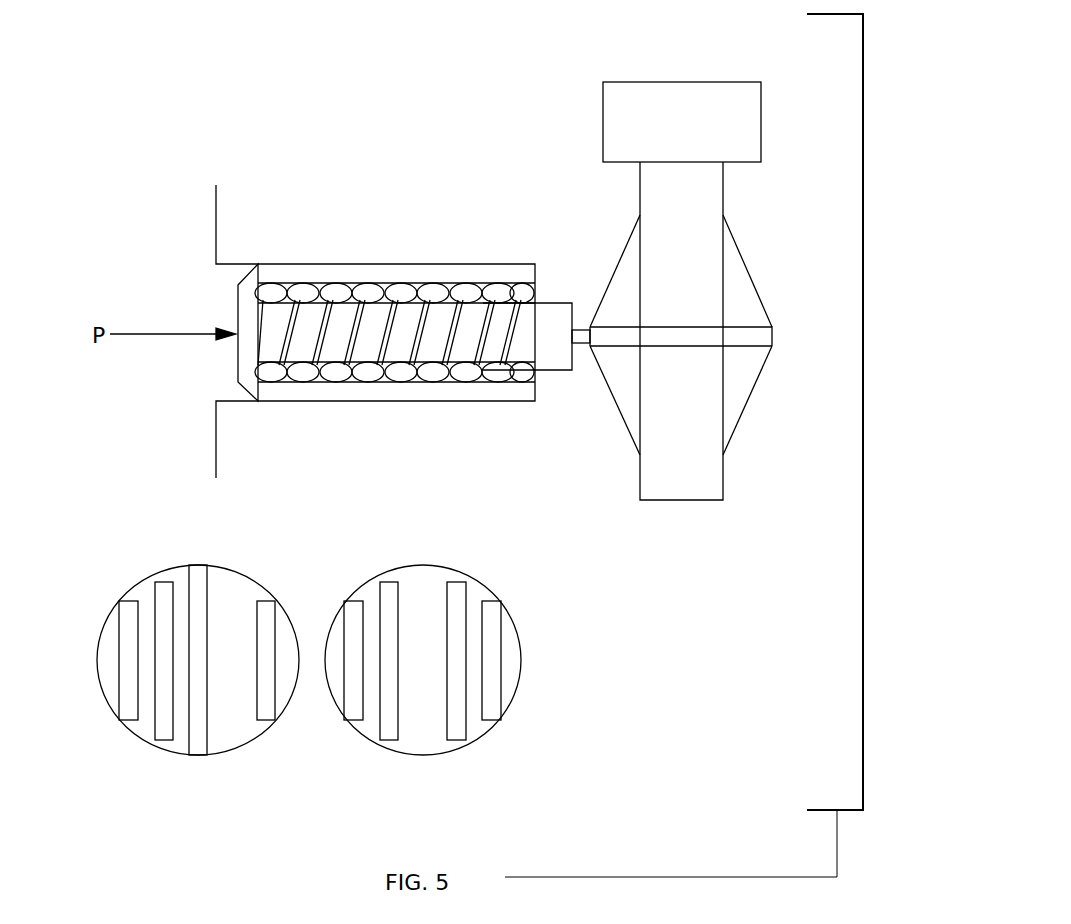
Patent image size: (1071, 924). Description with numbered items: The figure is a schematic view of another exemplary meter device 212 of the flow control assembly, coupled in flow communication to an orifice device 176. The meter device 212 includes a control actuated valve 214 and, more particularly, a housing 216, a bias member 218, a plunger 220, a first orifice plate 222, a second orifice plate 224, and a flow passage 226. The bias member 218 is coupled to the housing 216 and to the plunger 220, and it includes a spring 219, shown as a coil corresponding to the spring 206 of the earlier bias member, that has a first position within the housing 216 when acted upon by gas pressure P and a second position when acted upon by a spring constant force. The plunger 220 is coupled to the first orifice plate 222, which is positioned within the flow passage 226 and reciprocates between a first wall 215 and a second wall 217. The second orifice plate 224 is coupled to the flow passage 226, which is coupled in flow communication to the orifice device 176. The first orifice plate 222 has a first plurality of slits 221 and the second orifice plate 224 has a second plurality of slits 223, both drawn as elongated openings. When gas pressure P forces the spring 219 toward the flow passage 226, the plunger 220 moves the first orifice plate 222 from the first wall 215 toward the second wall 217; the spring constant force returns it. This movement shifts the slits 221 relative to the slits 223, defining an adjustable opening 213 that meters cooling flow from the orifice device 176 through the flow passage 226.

The orifice device 176 is at (681, 81).
The spring 206 is at (295, 353).
The meter device 212 is at (333, 258).
The adjustable opening 213 is at (658, 272).
The control actuated valve 214 is at (558, 300).
The first wall 215 is at (640, 478).
The housing 216 is at (260, 264).
The second wall 217 is at (723, 478).
The bias member 218 is at (220, 288).
The spring 219 is at (470, 285).
The plunger 220 is at (587, 328).
The first plurality of slits 221 is at (196, 757).
The first orifice plate 222 is at (680, 347).
The second plurality of slits 223 is at (465, 728).
The second orifice plate 224 is at (692, 335).
The flow passage 226 is at (683, 197).